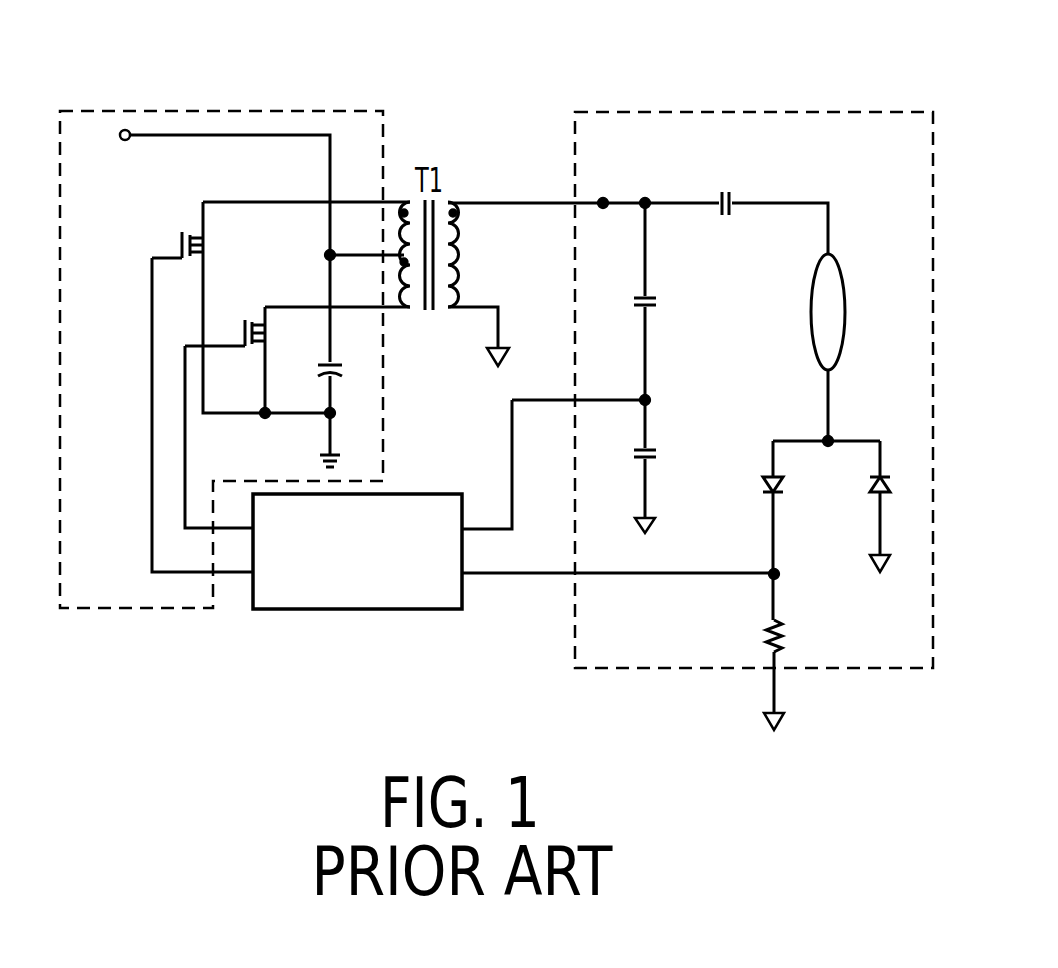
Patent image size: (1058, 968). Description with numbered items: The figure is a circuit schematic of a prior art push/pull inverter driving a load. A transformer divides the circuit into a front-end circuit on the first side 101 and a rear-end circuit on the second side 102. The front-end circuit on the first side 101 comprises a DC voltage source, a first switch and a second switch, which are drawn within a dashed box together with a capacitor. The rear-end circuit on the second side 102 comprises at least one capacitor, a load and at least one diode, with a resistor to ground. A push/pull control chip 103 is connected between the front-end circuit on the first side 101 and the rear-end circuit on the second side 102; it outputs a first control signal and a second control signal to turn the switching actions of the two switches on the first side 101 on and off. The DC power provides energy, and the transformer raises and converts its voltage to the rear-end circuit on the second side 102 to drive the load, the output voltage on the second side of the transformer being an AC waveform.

The first side 101 is at (222, 111).
The second side 102 is at (754, 112).
The push/pull control chip 103 is at (323, 609).